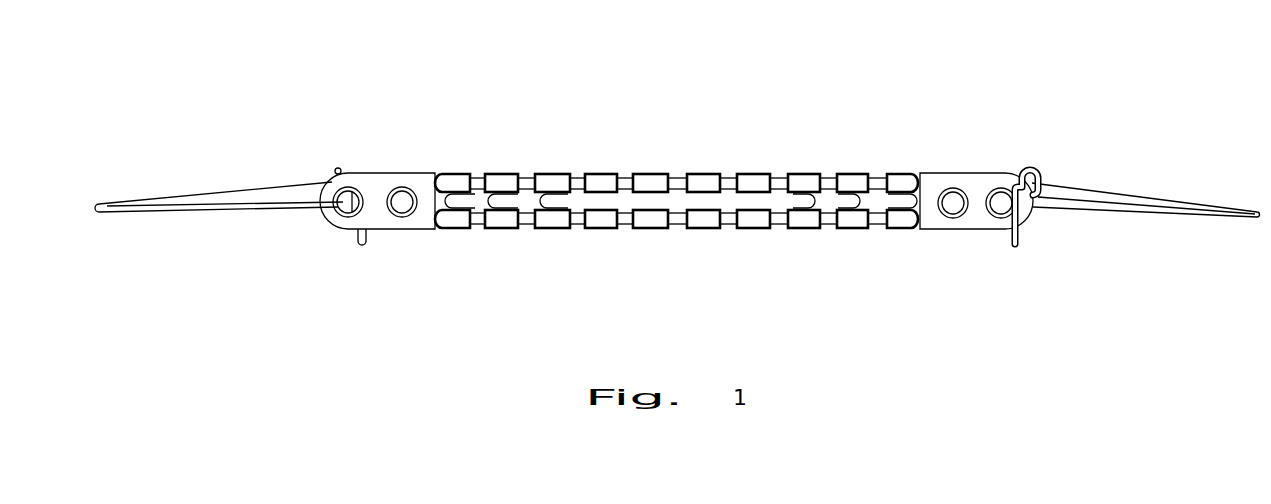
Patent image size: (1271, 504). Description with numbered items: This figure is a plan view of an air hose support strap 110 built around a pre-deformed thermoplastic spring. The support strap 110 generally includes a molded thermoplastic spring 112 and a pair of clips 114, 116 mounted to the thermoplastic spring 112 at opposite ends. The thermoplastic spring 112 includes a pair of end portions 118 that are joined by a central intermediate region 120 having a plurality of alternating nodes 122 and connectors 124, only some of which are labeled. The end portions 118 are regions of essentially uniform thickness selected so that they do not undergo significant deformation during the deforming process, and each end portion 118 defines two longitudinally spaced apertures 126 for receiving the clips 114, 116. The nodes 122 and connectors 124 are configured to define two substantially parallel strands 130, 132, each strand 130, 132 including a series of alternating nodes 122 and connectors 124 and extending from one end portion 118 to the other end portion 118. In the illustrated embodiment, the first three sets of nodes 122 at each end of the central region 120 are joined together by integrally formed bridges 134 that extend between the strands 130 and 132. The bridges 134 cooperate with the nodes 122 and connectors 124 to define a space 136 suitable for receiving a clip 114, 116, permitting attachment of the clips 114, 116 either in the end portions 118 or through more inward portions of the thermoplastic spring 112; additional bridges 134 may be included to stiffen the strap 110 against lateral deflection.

The air hose support strap 110 is at (598, 99).
The thermoplastic spring 112 is at (953, 147).
The clip 114 is at (228, 192).
The clip 116 is at (1133, 193).
The end portion 118 is at (377, 220).
The central intermediate region 120 is at (668, 268).
The node 122 is at (557, 174).
The connector 124 is at (579, 174).
The aperture 126 is at (348, 188).
The strand 130 is at (505, 160).
The strand 132 is at (491, 246).
The bridge 134 is at (480, 212).
The space 136 is at (461, 174).